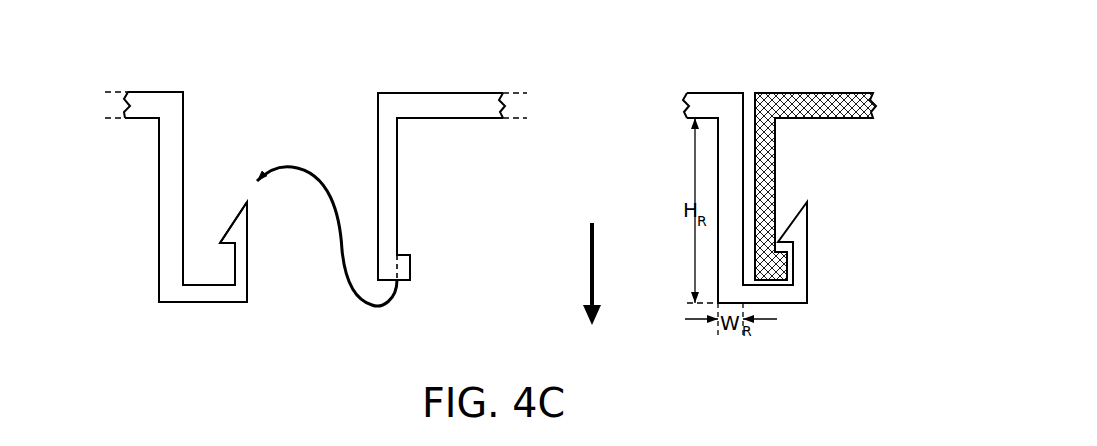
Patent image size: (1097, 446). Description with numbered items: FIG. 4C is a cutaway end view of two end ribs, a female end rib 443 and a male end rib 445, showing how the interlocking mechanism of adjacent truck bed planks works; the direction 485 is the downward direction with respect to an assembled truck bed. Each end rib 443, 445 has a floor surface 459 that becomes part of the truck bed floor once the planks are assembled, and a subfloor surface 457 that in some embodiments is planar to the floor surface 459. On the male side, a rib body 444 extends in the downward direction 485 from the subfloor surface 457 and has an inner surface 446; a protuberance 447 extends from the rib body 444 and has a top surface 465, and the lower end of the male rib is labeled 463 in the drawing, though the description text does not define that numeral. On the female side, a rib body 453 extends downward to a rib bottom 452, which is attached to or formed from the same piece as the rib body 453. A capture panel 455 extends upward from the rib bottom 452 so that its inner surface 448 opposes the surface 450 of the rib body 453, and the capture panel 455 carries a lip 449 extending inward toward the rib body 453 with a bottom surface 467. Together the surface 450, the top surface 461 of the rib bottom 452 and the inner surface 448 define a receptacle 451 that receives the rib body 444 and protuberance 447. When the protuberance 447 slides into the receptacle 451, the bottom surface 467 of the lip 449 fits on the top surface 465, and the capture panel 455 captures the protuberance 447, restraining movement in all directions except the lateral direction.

The female end rib 443 is at (156, 93).
The rib body 444 is at (388, 161).
The male end rib 445 is at (440, 93).
The inner surface 446 is at (401, 197).
The protuberance 447 is at (402, 258).
The inner surface of capture panel 448 is at (231, 281).
The lip 449 is at (228, 237).
The surface of rib body 450 is at (186, 128).
The receptacle 451 is at (208, 262).
The rib bottom 452 is at (195, 292).
The rib body 453 is at (168, 237).
The capture panel 455 is at (241, 268).
The subfloor surface 457 is at (105, 119).
The floor surface 459 is at (105, 91).
The top surface of rib bottom 461 is at (190, 282).
The bottom edge of insert 463 is at (413, 282).
The top surface of protuberance 465 is at (412, 252).
The bottom surface of lip 467 is at (224, 246).
The downward direction 485 is at (590, 285).